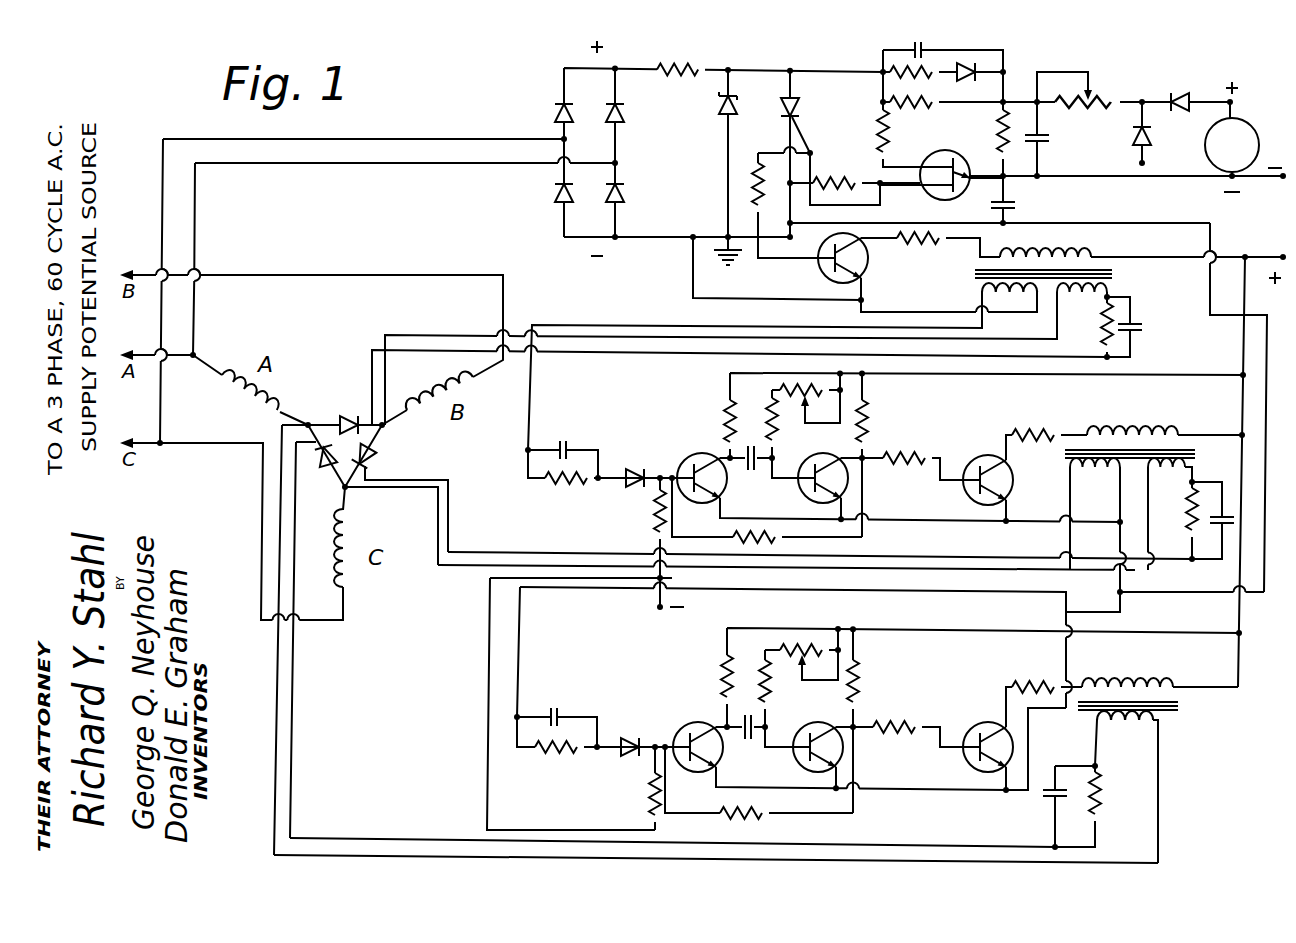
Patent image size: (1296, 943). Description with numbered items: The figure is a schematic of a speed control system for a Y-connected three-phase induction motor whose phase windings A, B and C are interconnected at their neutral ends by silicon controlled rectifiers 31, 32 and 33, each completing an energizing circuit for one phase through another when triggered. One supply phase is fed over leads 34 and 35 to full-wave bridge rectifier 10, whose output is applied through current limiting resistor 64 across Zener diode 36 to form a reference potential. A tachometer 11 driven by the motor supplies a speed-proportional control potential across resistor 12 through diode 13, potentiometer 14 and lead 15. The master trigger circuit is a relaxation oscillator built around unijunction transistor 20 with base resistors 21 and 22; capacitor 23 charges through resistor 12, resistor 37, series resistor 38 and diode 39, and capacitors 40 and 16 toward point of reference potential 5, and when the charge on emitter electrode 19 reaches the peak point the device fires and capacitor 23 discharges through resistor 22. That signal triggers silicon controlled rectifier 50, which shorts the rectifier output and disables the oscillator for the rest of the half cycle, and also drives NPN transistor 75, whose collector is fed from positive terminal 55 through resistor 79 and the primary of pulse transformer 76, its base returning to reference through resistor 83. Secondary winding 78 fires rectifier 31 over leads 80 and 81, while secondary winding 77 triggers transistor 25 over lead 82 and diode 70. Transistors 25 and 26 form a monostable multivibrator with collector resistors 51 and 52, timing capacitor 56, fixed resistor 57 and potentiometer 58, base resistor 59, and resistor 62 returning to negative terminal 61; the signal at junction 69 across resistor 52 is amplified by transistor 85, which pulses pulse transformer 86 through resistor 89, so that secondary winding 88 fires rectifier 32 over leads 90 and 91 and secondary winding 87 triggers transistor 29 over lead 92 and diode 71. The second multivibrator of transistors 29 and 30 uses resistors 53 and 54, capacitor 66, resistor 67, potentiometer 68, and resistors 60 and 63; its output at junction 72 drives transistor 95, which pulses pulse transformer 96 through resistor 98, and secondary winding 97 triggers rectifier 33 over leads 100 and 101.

The point of reference potential 5 is at (733, 258).
The full-wave diode bridge rectifier circuit 10 is at (720, 148).
The tachometer 11 is at (1253, 125).
The resistor 12 is at (998, 150).
The diode 13 is at (1182, 95).
The potentiometer 14 is at (1108, 95).
The lead 15 is at (1125, 178).
The capacitor 16 is at (1045, 140).
The emitter electrode 19 is at (958, 185).
The unijunction transistor 20 is at (928, 196).
The base resistor 21 is at (886, 130).
The base resistor 22 is at (843, 178).
The capacitor 23 is at (1015, 205).
The transistor 25 is at (692, 458).
The transistor 26 is at (801, 500).
The transistor 29 is at (692, 727).
The transistor 30 is at (800, 765).
The silicon controlled rectifier 31 is at (354, 418).
The silicon controlled rectifier 32 is at (378, 458).
The silicon controlled rectifier 33 is at (322, 470).
The lead 34 is at (478, 137).
The lead 35 is at (505, 166).
The Zener diode 36 is at (724, 120).
The resistor 37 is at (930, 108).
The resistor 38 is at (912, 76).
The diode 39 is at (970, 80).
The capacitor 40 is at (905, 50).
The silicon controlled rectifier 50 is at (806, 104).
The resistor 51 is at (728, 420).
The resistor 52 is at (872, 430).
The resistor 53 is at (724, 682).
The resistor 54 is at (866, 692).
The terminal 55 is at (1282, 250).
The capacitor 56 is at (752, 468).
The fixed resistor 57 is at (775, 428).
The potentiometer 58 is at (790, 395).
The resistor 59 is at (733, 537).
The resistor 60 is at (732, 818).
The terminal 61 is at (656, 610).
The resistor 62 is at (652, 522).
The resistor 63 is at (650, 790).
The current limiting resistor 64 is at (674, 78).
The capacitor 66 is at (748, 738).
The fixed resistor 67 is at (772, 700).
The potentiometer 68 is at (790, 652).
The junction 69 is at (870, 470).
The diode 70 is at (634, 470).
The diode 71 is at (634, 740).
The junction 72 is at (866, 742).
The NPN transistor 75 is at (866, 274).
The pulse transformer 76 is at (1070, 250).
The secondary winding 77 is at (982, 292).
The secondary winding 78 is at (1110, 290).
The current limiting resistor 79 is at (918, 245).
The lead 80 is at (1106, 340).
The lead 81 is at (1052, 318).
The lead 82 is at (830, 327).
The resistor 83 is at (757, 165).
The NPN transistor 85 is at (986, 458).
The pulse transformer 86 is at (1120, 428).
The secondary winding 87 is at (1090, 473).
The secondary winding 88 is at (1166, 478).
The current limiting resistor 89 is at (1038, 428).
The lead 90 is at (1162, 562).
The lead 91 is at (1068, 592).
The lead 92 is at (1060, 538).
The NPN transistor 95 is at (986, 725).
The pulse transformer 96 is at (1122, 680).
The secondary winding 97 is at (1114, 726).
The current limiting resistor 98 is at (1034, 686).
The lead 100 is at (1098, 840).
The lead 101 is at (1160, 856).